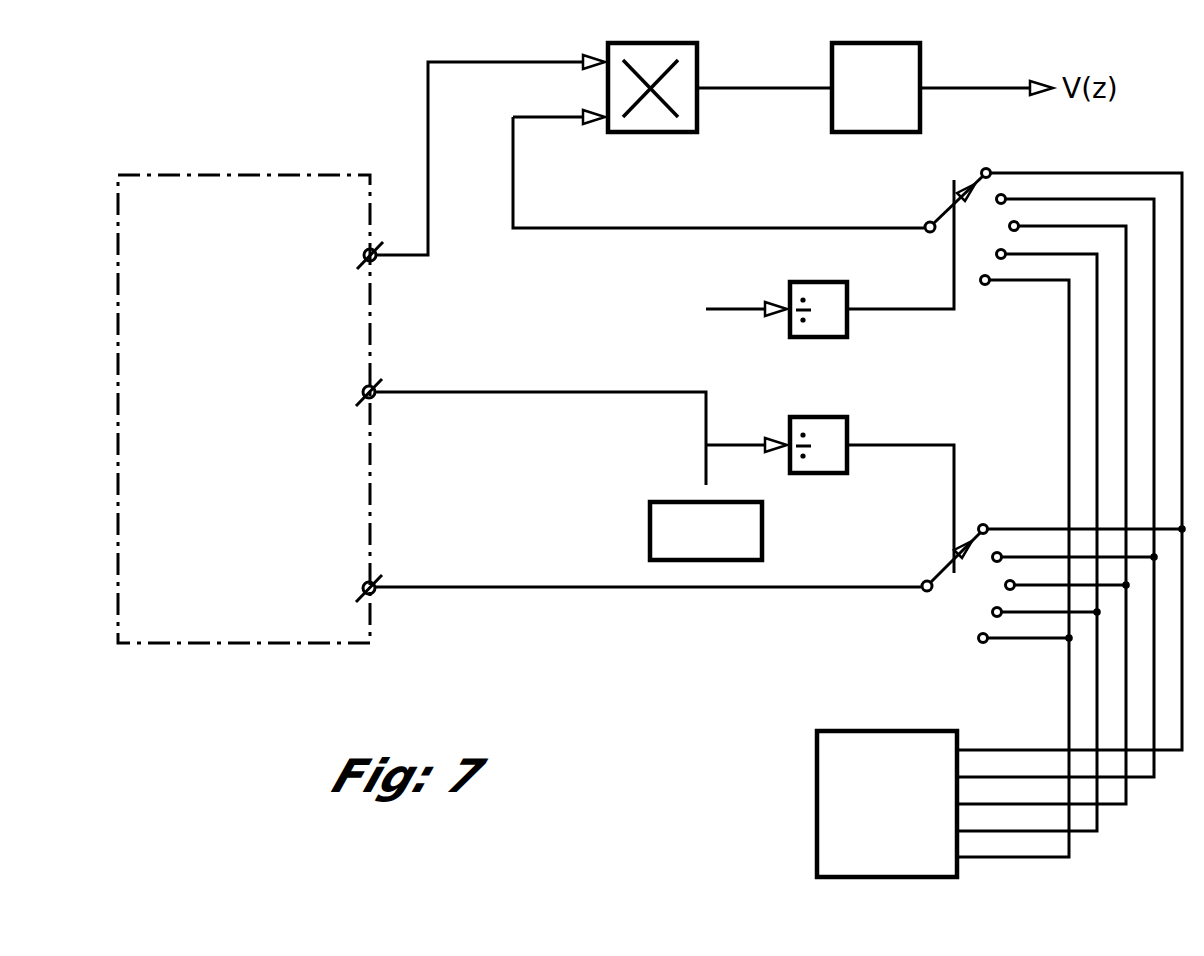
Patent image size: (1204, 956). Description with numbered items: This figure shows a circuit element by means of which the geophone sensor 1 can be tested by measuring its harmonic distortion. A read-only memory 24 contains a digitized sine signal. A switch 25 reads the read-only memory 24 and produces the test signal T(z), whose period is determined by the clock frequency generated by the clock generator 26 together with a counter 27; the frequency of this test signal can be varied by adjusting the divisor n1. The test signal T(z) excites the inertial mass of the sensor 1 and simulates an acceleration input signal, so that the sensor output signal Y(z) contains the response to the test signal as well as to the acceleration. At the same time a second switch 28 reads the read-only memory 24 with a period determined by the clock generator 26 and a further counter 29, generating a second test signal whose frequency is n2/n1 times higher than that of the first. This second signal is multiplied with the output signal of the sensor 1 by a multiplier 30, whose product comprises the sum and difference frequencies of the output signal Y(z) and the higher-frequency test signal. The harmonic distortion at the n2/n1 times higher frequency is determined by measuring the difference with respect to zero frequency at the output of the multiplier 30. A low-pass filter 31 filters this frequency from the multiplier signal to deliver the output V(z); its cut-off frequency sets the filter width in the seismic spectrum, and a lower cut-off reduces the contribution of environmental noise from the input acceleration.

The sensor 1 is at (166, 175).
The read-only memory 24 is at (870, 740).
The switch 25 is at (968, 584).
The clock generator 26 is at (677, 488).
The counter 27 is at (847, 427).
The second switch 28 is at (967, 227).
The counter 29 is at (847, 292).
The multiplier 30 is at (650, 130).
The low-pass filter 31 is at (848, 126).